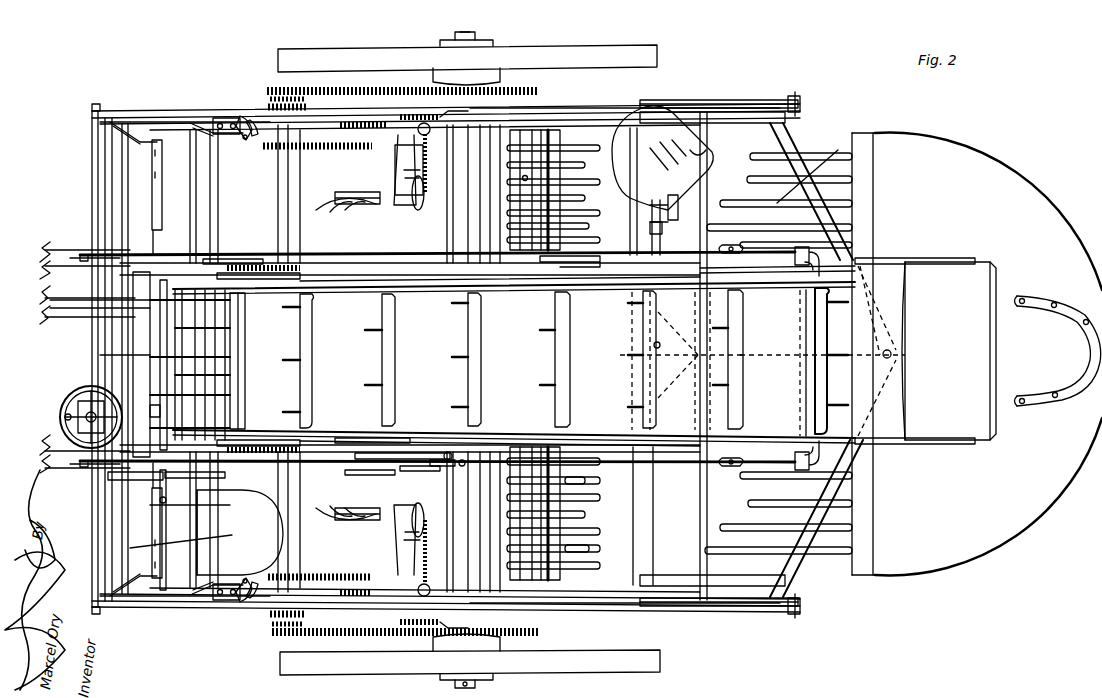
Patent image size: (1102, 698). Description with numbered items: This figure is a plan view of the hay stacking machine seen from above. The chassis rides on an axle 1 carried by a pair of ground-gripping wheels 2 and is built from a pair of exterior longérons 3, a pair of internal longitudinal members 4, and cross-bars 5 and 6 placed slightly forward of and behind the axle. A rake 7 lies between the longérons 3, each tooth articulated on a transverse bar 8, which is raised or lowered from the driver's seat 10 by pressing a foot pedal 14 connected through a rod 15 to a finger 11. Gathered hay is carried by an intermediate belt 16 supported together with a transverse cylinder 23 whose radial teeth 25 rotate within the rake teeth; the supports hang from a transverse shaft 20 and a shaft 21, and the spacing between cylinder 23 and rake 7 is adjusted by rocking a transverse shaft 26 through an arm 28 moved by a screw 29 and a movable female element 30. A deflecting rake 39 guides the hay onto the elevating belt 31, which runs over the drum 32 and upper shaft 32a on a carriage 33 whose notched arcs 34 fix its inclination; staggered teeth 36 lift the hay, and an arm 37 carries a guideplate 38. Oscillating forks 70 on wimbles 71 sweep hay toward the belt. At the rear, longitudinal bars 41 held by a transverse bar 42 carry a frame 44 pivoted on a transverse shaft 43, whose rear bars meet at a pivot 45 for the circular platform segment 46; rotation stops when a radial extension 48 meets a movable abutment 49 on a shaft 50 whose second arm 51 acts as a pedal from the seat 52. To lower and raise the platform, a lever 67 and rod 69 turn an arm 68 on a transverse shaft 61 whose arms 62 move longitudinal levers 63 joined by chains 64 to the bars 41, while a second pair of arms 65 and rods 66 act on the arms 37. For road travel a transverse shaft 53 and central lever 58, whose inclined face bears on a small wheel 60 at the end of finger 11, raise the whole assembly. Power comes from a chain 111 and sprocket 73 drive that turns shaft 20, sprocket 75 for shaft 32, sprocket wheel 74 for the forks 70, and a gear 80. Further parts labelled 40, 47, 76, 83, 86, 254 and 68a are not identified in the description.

The axle 1 is at (486, 34).
The wheels 2 is at (655, 56).
The exterior longitudinal members (longérons) 3 is at (198, 122).
The internal longitudinal members 4 is at (333, 260).
The transverse frame member (cross-bar) 5 is at (106, 198).
The transverse frame member (cross-bar) 6 is at (562, 190).
The rake 7 is at (592, 513).
The transverse bar 8 is at (448, 222).
The driver's seat 10 is at (215, 553).
The arm or finger 11 is at (440, 467).
The foot pedal 14 is at (232, 516).
The rod 15 is at (360, 482).
The endless belt 16 is at (202, 414).
The transverse shaft (main shaft) 20 is at (280, 200).
The transverse shaft 21 is at (290, 86).
The transverse cylinder 23 is at (560, 176).
The radial teeth 25 is at (570, 228).
The rail 254 is at (607, 107).
The transverse shaft 26 is at (170, 630).
The arm 28 is at (190, 365).
The screw 29 is at (80, 405).
The movable female element 30 is at (72, 425).
The elevating belt 31 is at (409, 196).
The lower shaft (drum) 32 is at (245, 288).
The upper shaft 32a is at (808, 252).
The carriage or support 33 is at (565, 370).
The notched arcs 34 is at (525, 286).
The staggered teeth 36 is at (380, 332).
The arm 37 is at (890, 262).
The guideplate 38 is at (968, 358).
The deflecting rake 39 is at (150, 353).
The shaft 40 is at (137, 305).
The longitudinal bars 41 is at (752, 104).
The transverse bar 42 is at (645, 540).
The transverse shaft (cross-bar) 43 is at (738, 542).
The frame 44 is at (792, 565).
The supporting pivot 45 is at (880, 370).
The circular platform segment 46 is at (1033, 196).
The diagonal brace 47 is at (812, 168).
The radial extension 48 is at (1090, 340).
The movable abutment (stop) 49 is at (660, 345).
The transverse shaft 50 is at (664, 246).
The second arm (pedal) 51 is at (682, 198).
The seat 52 is at (706, 160).
The transverse shaft 53 is at (478, 526).
The central lever 58 is at (385, 472).
The small wheel 60 is at (395, 464).
The transverse shaft 61 is at (158, 508).
The arms 62 is at (146, 359).
The longitudinal levers 63 is at (122, 111).
The chains 64 is at (800, 98).
The second pair of arms 65 is at (95, 258).
The rods 66 is at (418, 284).
The lever 67 is at (600, 259).
The arm 68 is at (218, 257).
The bar 68a is at (348, 440).
The rod 69 is at (309, 359).
The forks 70 is at (325, 206).
The wimbles 71 is at (525, 89).
The sprocket 73 is at (240, 353).
The sprocket wheel 74 is at (268, 152).
The sprocket 75 is at (312, 288).
The bar 76 is at (252, 440).
The gear 80 is at (434, 359).
The bracket 83 is at (130, 492).
The bracket 86 is at (242, 116).
The chain 111 is at (363, 88).